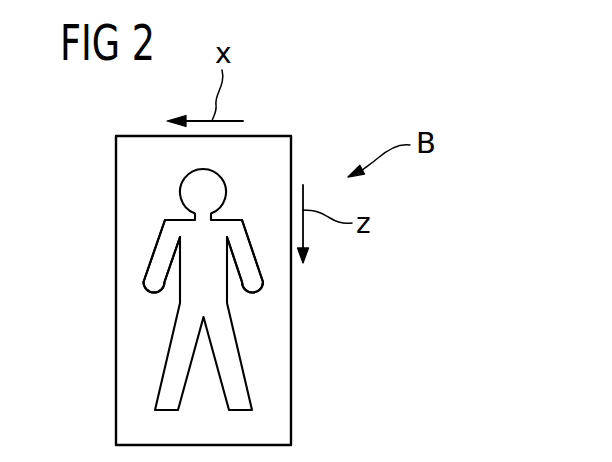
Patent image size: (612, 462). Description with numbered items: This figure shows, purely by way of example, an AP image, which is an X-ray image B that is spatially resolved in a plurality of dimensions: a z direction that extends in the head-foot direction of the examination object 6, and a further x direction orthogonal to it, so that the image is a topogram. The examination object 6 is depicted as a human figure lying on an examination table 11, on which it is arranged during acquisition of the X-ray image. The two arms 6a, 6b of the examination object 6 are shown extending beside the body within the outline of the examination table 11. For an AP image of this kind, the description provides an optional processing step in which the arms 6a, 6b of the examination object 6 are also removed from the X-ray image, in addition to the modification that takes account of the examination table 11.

The examination table 11 is at (291, 402).
The examination object 6 is at (152, 403).
The arm of the examination object 6a is at (147, 276).
The arm of the examination object 6b is at (258, 272).